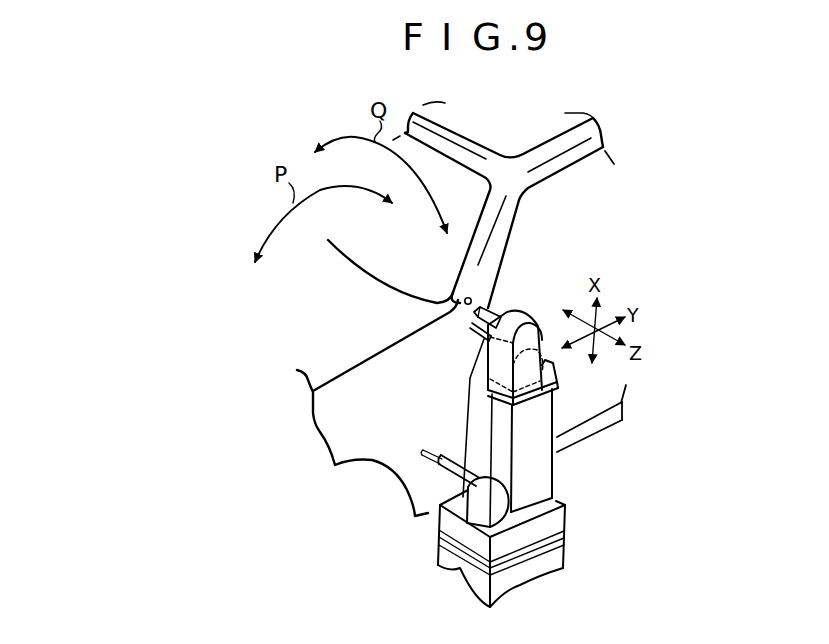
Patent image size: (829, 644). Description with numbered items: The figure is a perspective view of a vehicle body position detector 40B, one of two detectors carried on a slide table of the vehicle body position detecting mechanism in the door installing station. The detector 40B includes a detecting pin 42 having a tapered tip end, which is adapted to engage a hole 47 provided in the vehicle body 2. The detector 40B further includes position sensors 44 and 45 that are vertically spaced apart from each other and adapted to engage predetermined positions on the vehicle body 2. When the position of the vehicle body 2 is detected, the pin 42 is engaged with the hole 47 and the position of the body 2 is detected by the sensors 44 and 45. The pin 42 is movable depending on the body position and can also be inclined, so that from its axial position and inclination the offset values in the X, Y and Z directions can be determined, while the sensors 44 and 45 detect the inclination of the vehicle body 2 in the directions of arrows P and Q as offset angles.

The vehicle body 2 is at (552, 171).
The hole 47 is at (450, 286).
The detecting pin 42 is at (501, 312).
The position sensor 44 is at (478, 346).
The position sensor 45 is at (452, 462).
The vehicle body position detector 40B is at (574, 465).